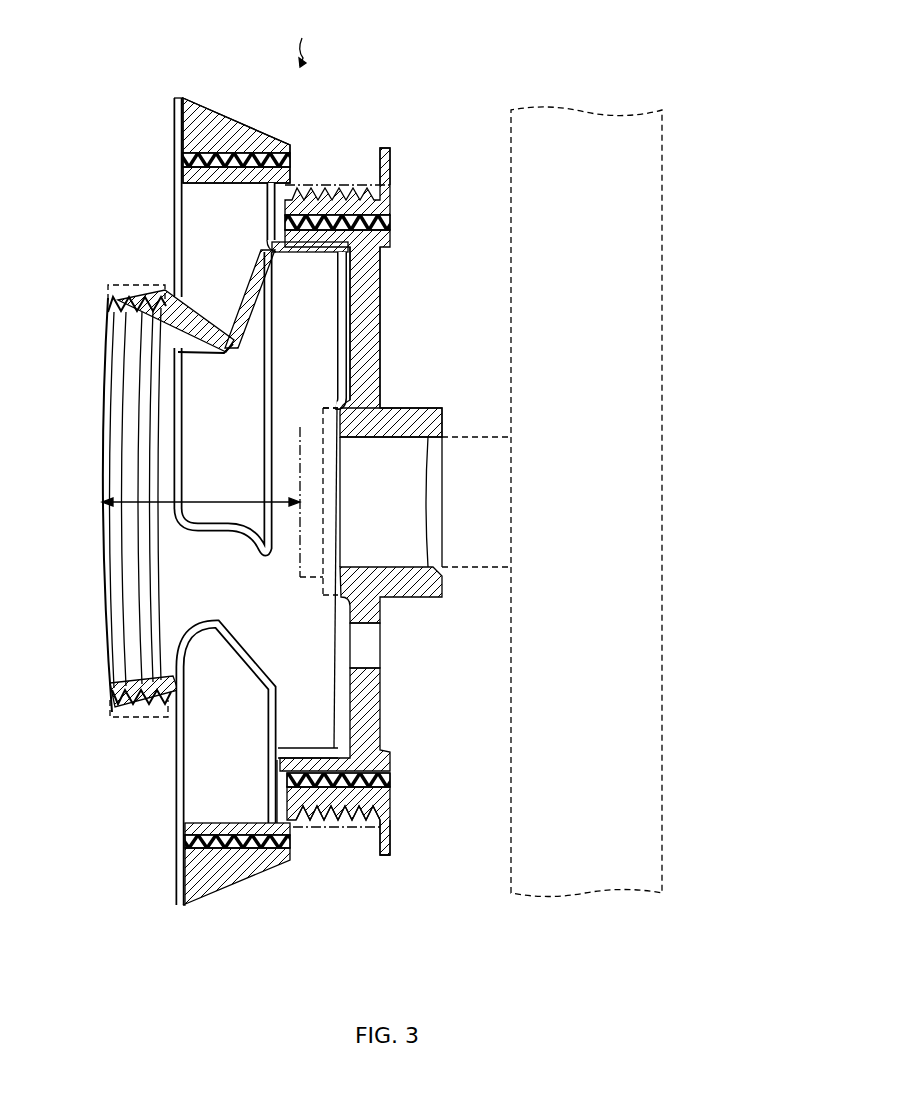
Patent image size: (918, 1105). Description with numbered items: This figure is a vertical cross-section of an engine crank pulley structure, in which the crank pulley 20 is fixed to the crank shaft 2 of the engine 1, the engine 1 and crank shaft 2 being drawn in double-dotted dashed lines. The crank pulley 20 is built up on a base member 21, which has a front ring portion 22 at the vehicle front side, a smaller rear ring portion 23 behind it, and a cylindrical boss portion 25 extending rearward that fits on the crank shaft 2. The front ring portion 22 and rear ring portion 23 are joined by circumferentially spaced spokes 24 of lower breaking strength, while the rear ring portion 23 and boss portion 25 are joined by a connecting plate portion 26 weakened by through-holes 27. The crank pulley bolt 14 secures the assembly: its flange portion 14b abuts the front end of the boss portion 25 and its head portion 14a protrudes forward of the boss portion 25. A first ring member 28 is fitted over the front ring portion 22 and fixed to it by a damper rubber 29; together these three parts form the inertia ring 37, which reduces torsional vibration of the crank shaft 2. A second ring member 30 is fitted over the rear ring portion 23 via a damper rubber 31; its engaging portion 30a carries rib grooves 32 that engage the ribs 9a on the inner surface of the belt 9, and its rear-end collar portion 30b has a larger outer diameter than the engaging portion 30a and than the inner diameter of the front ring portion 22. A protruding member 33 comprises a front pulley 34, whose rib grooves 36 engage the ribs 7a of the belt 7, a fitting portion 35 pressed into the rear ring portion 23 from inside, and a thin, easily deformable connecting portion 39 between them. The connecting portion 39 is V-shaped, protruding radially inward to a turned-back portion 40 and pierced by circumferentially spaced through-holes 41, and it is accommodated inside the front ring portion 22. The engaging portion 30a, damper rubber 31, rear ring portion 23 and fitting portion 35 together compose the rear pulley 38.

The engine 1 is at (589, 118).
The crank shaft 2 is at (474, 446).
The belt 7 is at (117, 471).
The ribs 7a is at (104, 318).
The belt 9 is at (359, 166).
The ribs 9a is at (384, 212).
The crank pulley bolt 14 is at (307, 498).
The head portion 14a is at (310, 572).
The flange portion 14b is at (331, 409).
The crank pulley 20 is at (170, 114).
The base member 21 is at (364, 500).
The front ring portion 22 is at (186, 176).
The rear ring portion 23 is at (392, 236).
The spokes 24 is at (276, 795).
The boss portion 25 is at (414, 418).
The connecting plate portion 26 is at (367, 303).
The through-holes 27 is at (368, 647).
The first ring member 28 is at (195, 97).
The damper rubber 29 is at (186, 158).
The second ring member 30 is at (371, 863).
The engaging portion 30a is at (318, 820).
The collar portion 30b is at (387, 858).
The damper rubber 31 is at (392, 781).
The rib grooves 32 is at (392, 842).
The protruding member 33 is at (164, 297).
The front pulley 34 is at (111, 704).
The fitting portion 35 is at (302, 254).
The rib grooves 36 is at (122, 683).
The inertia ring 37 is at (170, 295).
The rear pulley 38 is at (352, 546).
The connecting portion 39 is at (263, 302).
The turned-back portion 40 is at (224, 355).
The through-holes 41 is at (243, 655).